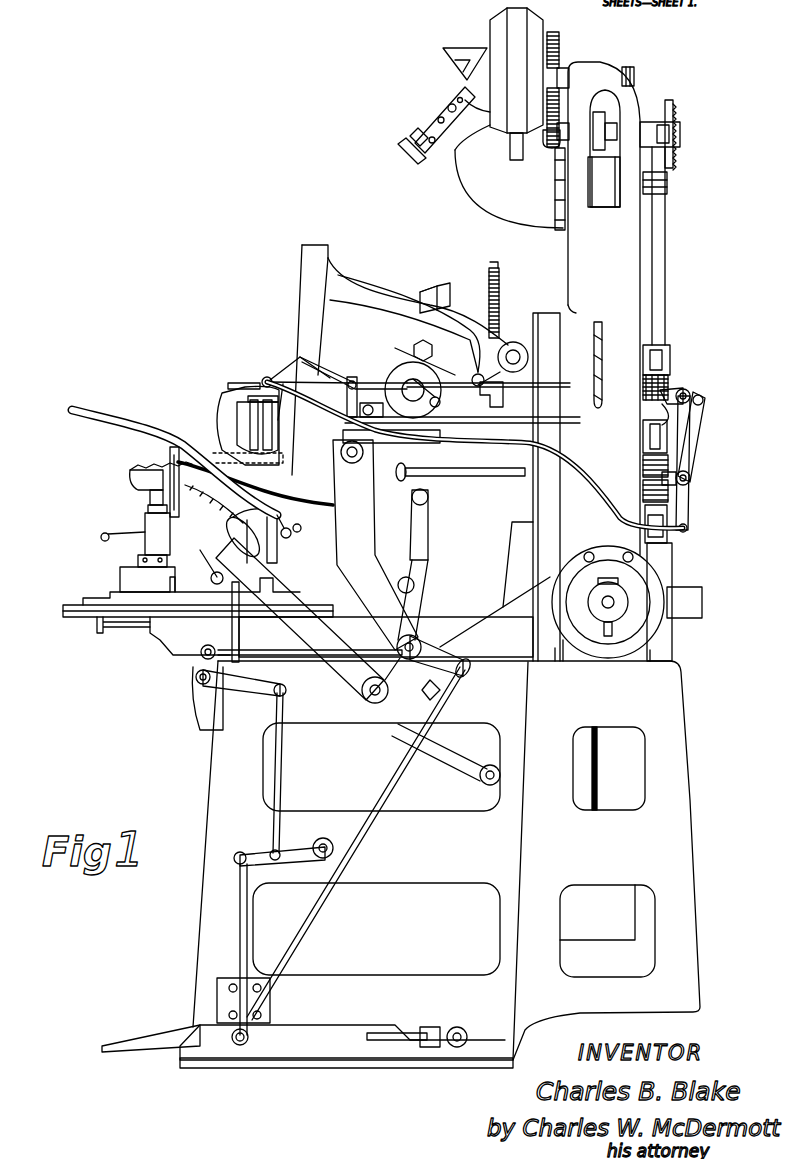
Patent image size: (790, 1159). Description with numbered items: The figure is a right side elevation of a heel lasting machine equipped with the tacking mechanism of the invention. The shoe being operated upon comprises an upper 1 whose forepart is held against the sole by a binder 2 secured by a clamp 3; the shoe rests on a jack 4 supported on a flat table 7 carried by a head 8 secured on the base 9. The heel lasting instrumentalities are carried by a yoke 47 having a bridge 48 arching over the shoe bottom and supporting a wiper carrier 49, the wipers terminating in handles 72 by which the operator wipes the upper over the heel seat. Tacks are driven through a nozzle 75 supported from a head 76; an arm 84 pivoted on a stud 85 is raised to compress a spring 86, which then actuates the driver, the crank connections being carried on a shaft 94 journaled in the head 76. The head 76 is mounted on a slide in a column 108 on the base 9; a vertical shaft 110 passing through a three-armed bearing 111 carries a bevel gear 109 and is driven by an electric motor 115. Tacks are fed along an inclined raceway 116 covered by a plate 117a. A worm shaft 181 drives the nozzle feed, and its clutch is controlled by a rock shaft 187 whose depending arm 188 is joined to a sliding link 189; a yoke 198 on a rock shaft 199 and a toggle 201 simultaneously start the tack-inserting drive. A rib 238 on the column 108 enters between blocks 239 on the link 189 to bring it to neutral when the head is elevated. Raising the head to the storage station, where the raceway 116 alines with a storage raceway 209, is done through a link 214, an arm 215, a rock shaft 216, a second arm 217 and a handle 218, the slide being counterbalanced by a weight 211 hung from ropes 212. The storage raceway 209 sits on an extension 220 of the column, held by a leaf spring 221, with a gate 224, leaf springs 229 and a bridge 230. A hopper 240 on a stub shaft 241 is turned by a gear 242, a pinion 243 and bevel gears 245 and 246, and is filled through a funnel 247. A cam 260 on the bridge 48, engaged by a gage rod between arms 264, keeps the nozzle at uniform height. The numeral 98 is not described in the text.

The upper 1 is at (118, 487).
The binder 2 is at (130, 475).
The clamp 3 is at (150, 468).
The jack 4 is at (133, 598).
The table 7 is at (67, 608).
The head 8 is at (270, 637).
The base 9 is at (222, 765).
The yoke 47 is at (430, 472).
The bridge 48 is at (222, 412).
The wiper carrier 49 is at (280, 410).
The handles 72 is at (181, 454).
The nozzle 75 is at (296, 423).
The head 76 is at (348, 293).
The arm 84 is at (514, 344).
The stud 85 is at (517, 345).
The spring 86 is at (488, 300).
The shaft 94 is at (395, 370).
The cam 98 is at (402, 363).
The column 108 is at (630, 270).
The bevel gear 109 is at (668, 375).
The vertical shaft 110 is at (657, 336).
The three-armed bearing 111 is at (677, 437).
The electric motor 115 is at (650, 630).
The raceway 116 is at (449, 288).
The plate 117a is at (422, 298).
The shaft 181 is at (487, 472).
The rock shaft 187 is at (690, 482).
The depending arm 188 is at (687, 513).
The sliding link 189 is at (575, 478).
The yoke 198 is at (660, 405).
The rock shaft 199 is at (703, 399).
The toggle 201 is at (690, 458).
The tack storage raceway 209 is at (432, 146).
The weight 211 is at (603, 932).
The ropes 212 is at (592, 785).
The link 214 is at (503, 600).
The arm 215 is at (450, 753).
The rock shaft 216 is at (373, 702).
The second arm 217 is at (335, 650).
The handle 218 is at (228, 530).
The extension 220 is at (488, 173).
The leaf spring 221 is at (477, 135).
The gate 224 is at (412, 150).
The leaf springs 229 is at (412, 132).
The bridge 230 is at (435, 122).
The rib 238 is at (603, 332).
The blocks 239 is at (609, 507).
The hopper 240 is at (523, 22).
The stub shaft 241 is at (633, 77).
The gear 242 is at (560, 45).
The pinion 243 is at (550, 148).
The bevel gear 245 is at (667, 170).
The bevel gear 246 is at (670, 116).
The filling funnel 247 is at (463, 53).
The cam 260 is at (238, 382).
The arms 264 is at (268, 376).